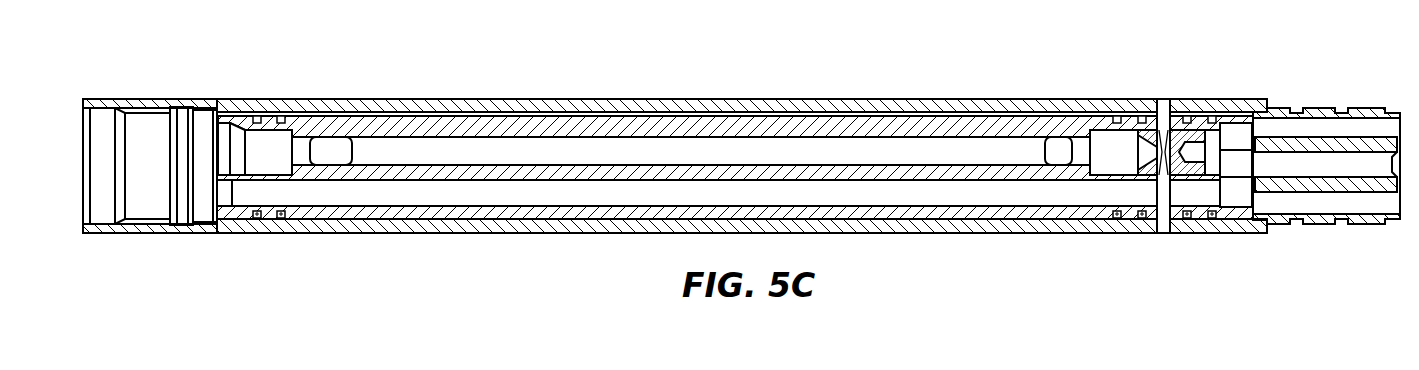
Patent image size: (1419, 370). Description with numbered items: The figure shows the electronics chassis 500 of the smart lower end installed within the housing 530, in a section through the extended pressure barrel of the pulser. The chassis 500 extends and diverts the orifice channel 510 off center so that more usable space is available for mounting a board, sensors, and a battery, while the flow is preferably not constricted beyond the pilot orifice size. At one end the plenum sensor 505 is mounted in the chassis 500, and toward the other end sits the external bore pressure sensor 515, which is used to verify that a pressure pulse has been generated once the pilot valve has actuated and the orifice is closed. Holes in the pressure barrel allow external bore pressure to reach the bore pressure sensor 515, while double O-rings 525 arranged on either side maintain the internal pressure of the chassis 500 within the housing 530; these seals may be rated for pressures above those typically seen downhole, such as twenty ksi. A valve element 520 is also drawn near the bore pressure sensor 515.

The chassis 500 is at (592, 122).
The plenum sensor 505 is at (268, 143).
The orifice channel 510 is at (377, 197).
The external bore pressure sensor 515 is at (1108, 143).
The valve 520 is at (1163, 105).
The double O-rings 525 is at (258, 219).
The housing 530 is at (817, 105).